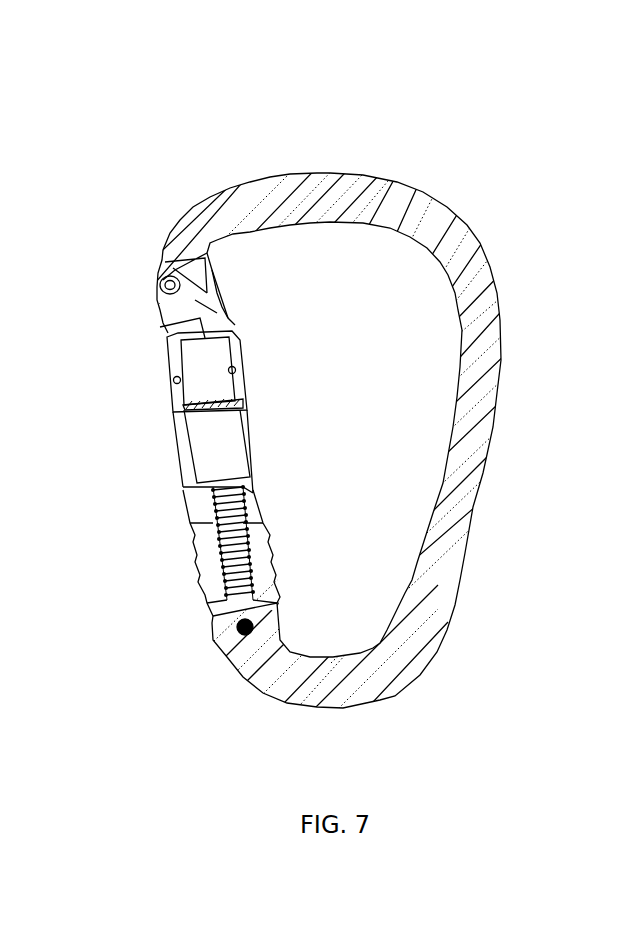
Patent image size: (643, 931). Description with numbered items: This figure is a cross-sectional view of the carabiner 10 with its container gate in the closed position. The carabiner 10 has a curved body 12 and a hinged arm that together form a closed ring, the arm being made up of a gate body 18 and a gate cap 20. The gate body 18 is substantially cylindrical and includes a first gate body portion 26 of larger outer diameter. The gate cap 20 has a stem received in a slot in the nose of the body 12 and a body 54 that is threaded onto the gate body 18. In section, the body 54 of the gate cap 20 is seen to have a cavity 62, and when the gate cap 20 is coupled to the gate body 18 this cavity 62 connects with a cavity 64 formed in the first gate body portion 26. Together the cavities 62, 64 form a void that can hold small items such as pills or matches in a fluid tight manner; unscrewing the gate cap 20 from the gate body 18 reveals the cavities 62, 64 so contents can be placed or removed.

The carabiner 10 is at (570, 130).
The body 12 is at (268, 198).
The gate body 18 is at (250, 443).
The gate cap 20 is at (163, 365).
The first gate body portion 26 is at (180, 460).
The body 54 is at (243, 340).
The cavity 62 is at (202, 347).
The cavity 64 is at (220, 463).